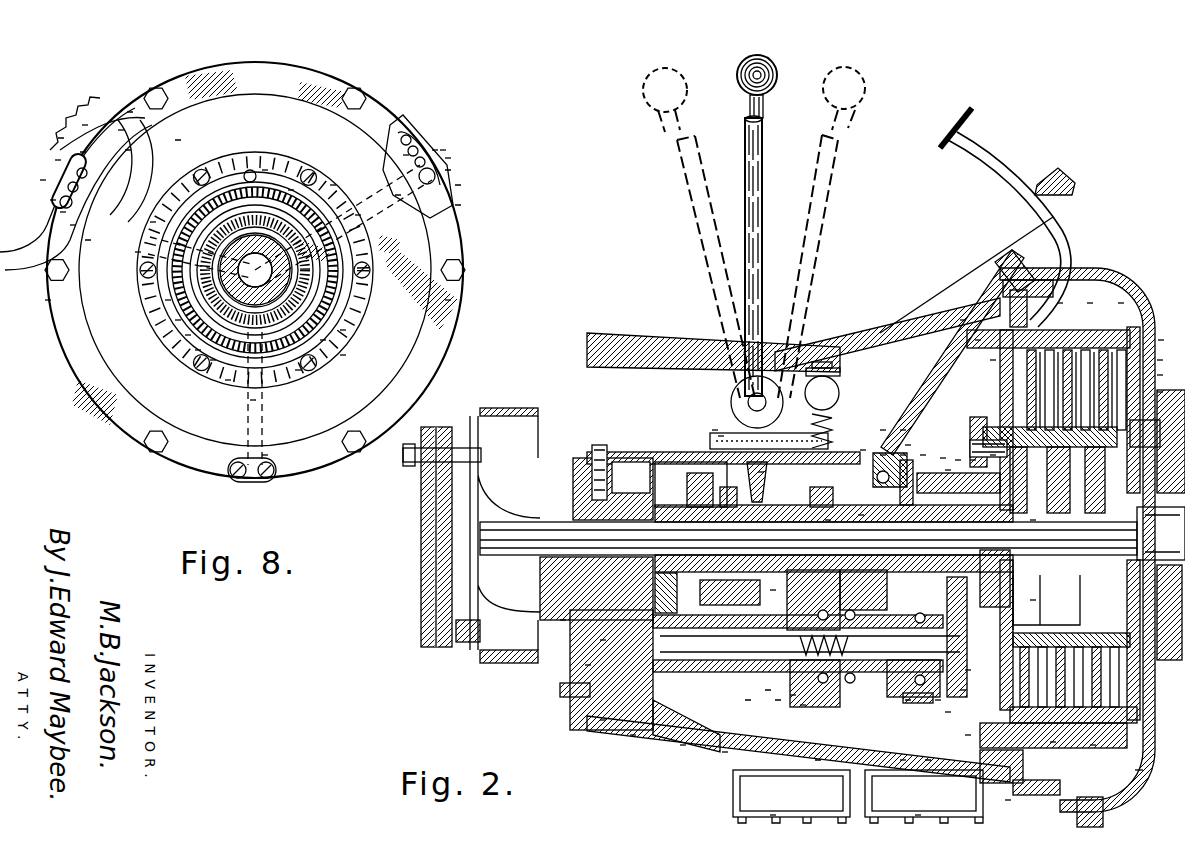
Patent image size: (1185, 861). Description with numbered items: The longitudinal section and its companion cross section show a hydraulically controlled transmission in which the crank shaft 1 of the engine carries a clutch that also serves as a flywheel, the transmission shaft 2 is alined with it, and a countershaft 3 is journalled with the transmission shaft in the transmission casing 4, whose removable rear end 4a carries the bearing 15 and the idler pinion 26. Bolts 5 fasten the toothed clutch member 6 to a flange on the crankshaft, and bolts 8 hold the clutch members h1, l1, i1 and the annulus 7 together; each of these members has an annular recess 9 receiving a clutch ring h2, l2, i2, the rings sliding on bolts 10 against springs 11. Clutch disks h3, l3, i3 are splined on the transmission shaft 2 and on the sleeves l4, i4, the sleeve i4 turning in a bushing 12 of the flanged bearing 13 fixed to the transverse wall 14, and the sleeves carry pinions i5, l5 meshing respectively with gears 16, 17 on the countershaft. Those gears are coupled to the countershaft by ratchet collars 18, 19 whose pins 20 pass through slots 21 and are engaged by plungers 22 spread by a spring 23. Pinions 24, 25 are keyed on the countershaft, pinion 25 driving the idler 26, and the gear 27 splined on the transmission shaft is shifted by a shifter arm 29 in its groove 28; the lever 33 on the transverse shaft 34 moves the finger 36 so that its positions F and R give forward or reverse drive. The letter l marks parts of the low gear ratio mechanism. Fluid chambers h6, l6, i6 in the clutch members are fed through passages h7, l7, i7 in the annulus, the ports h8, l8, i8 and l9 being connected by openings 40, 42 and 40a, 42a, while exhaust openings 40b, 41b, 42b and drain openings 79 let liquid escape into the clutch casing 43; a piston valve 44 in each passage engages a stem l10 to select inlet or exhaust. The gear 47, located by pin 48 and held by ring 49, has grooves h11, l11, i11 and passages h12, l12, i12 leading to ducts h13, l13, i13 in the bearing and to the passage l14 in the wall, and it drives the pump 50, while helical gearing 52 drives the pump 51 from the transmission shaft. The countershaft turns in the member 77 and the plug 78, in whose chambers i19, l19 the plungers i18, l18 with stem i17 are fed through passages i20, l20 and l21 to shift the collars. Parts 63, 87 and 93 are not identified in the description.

In FIG. 2, the crank shaft 1 is at (803, 537).
In FIG. 8, the transmission shaft 2 is at (210, 360).
In FIG. 2, the transmission shaft 2 is at (808, 538).
In FIG. 2, the countershaft 3 is at (700, 750).
In FIG. 2, the transmission casing 4 is at (655, 740).
In FIG. 2, the rear end of casing 4a is at (630, 735).
In FIG. 2, the bolts 5 is at (1157, 525).
In FIG. 8, the clutch member 6 is at (40, 180).
In FIG. 2, the clutch member 6 is at (1160, 340).
In FIG. 8, the annulus 7 is at (445, 300).
In FIG. 2, the annulus 7 is at (950, 300).
In FIG. 8, the bolts 8 is at (45, 300).
In FIG. 2, the bolts 8 is at (905, 460).
In FIG. 8, the annular recess 9 is at (235, 464).
In FIG. 2, the annular recess 9 is at (1108, 300).
In FIG. 8, the bolts 10 is at (158, 108).
In FIG. 2, the bolts 10 is at (1140, 745).
In FIG. 8, the springs 11 is at (80, 152).
In FIG. 2, the springs 11 is at (1135, 700).
In FIG. 8, the bushing 12 is at (225, 380).
In FIG. 2, the bushing 12 is at (990, 360).
In FIG. 8, the flanged bearing 13 is at (175, 320).
In FIG. 2, the flanged bearing 13 is at (905, 445).
In FIG. 2, the transverse wall 14 is at (880, 455).
In FIG. 2, the bearing 15 is at (631, 477).
In FIG. 2, the gear 16 is at (865, 700).
In FIG. 2, the gear 17 is at (800, 705).
In FIG. 8, the collar 18 is at (262, 170).
In FIG. 2, the collar 18 is at (900, 760).
In FIG. 2, the collar 19 is at (790, 695).
In FIG. 2, the transverse pins 20 is at (745, 700).
In FIG. 2, the slots 21 is at (765, 690).
In FIG. 2, the plungers 22 is at (775, 700).
In FIG. 2, the spring 23 is at (790, 760).
In FIG. 2, the pinion 24 is at (722, 752).
In FIG. 2, the pinion 25 is at (680, 745).
In FIG. 2, the idler pinion 26 is at (677, 580).
In FIG. 2, the gear 27 is at (690, 430).
In FIG. 2, the peripheral groove 28 is at (715, 430).
In FIG. 2, the shifter arm 29 is at (720, 436).
In FIG. 2, the lever 33 is at (762, 150).
In FIG. 2, the transverse shaft 34 is at (790, 380).
In FIG. 2, the finger 36 is at (762, 472).
In FIG. 8, the openings 40 is at (110, 240).
In FIG. 8, the openings 40a is at (135, 252).
In FIG. 8, the exhaust opening 40b is at (55, 160).
In FIG. 8, the exhaust opening 41b is at (265, 480).
In FIG. 8, the openings 42 is at (440, 150).
In FIG. 8, the openings 42a is at (403, 155).
In FIG. 8, the exhaust opening 42b is at (445, 158).
In FIG. 2, the clutch casing 43 is at (1105, 805).
In FIG. 2, the piston valve 44 is at (1060, 770).
In FIG. 8, the gear 47 is at (257, 172).
In FIG. 2, the pin 48 is at (975, 340).
In FIG. 8, the ring 49 is at (340, 330).
In FIG. 2, the ring 49 is at (960, 320).
In FIG. 2, the rotary gear pump 50 is at (955, 775).
In FIG. 2, the rotary gear pump 51 is at (770, 815).
In FIG. 2, the helical gearing 52 is at (770, 590).
In FIG. 2, the selector quadrant 63 is at (1052, 180).
In FIG. 2, the member 77 is at (965, 735).
In FIG. 2, the plug 78 is at (585, 700).
In FIG. 2, the openings 79 is at (1130, 305).
In FIG. 2, the drum flange 87 is at (1143, 770).
In FIG. 2, the lever pivot ball 93 is at (822, 405).
In FIG. 2, the forward lever position F is at (680, 160).
In FIG. 2, the reverse lever position R is at (834, 157).
In FIG. 2, the low gear ratio reference letter l is at (945, 470).
In FIG. 8, the clutch member h1 is at (82, 125).
In FIG. 2, the clutch member h1 is at (1120, 303).
In FIG. 8, the clutch member l1 is at (118, 130).
In FIG. 2, the clutch member l1 is at (1090, 303).
In FIG. 8, the clutch member i1 is at (127, 112).
In FIG. 2, the clutch member i1 is at (1060, 303).
In FIG. 2, the clutch ring h2 is at (1158, 392).
In FIG. 2, the clutch ring l2 is at (1158, 375).
In FIG. 2, the clutch ring i2 is at (1158, 360).
In FIG. 2, the clutch disk h3 is at (940, 458).
In FIG. 2, the clutch disk l3 is at (920, 455).
In FIG. 2, the clutch disk i3 is at (900, 455).
In FIG. 8, the sleeve l4 is at (320, 340).
In FIG. 2, the sleeve l4 is at (1030, 520).
In FIG. 8, the sleeve i4 is at (295, 370).
In FIG. 2, the sleeve i4 is at (858, 515).
In FIG. 2, the pinion l5 is at (825, 520).
In FIG. 2, the pinion i5 is at (860, 450).
In FIG. 8, the fluid chamber h6 is at (60, 212).
In FIG. 2, the fluid chamber h6 is at (990, 455).
In FIG. 8, the fluid chamber l6 is at (70, 225).
In FIG. 2, the fluid chamber l6 is at (970, 460).
In FIG. 8, the fluid chamber i6 is at (85, 240).
In FIG. 2, the fluid chamber i6 is at (955, 460).
In FIG. 8, the fluid passage h7 is at (60, 140).
In FIG. 8, the fluid passage l7 is at (262, 455).
In FIG. 2, the fluid passage l7 is at (960, 690).
In FIG. 8, the fluid passage i7 is at (445, 170).
In FIG. 8, the port h8 is at (50, 200).
In FIG. 2, the port l8 is at (1050, 742).
In FIG. 8, the port i8 is at (432, 150).
In FIG. 2, the port l9 is at (1090, 745).
In FIG. 2, the stem l10 is at (1005, 800).
In FIG. 8, the annular groove h11 is at (340, 355).
In FIG. 2, the annular groove h11 is at (900, 430).
In FIG. 8, the annular groove l11 is at (195, 350).
In FIG. 8, the annular groove i11 is at (355, 215).
In FIG. 8, the passage h12 is at (150, 222).
In FIG. 8, the passage l12 is at (250, 400).
In FIG. 2, the passage l12 is at (1030, 600).
In FIG. 8, the passage i12 is at (330, 185).
In FIG. 8, the duct h13 is at (288, 190).
In FIG. 8, the duct l13 is at (165, 300).
In FIG. 8, the duct i13 is at (185, 335).
In FIG. 2, the passage l14 is at (880, 430).
In FIG. 2, the stem i17 is at (935, 700).
In FIG. 2, the plunger l18 is at (585, 665).
In FIG. 2, the plunger i18 is at (965, 670).
In FIG. 2, the cylindrical chamber l19 is at (600, 720).
In FIG. 2, the cylindrical chamber i19 is at (945, 712).
In FIG. 2, the passage l20 is at (600, 640).
In FIG. 2, the passage i20 is at (915, 815).
In FIG. 2, the passage l21 is at (560, 620).